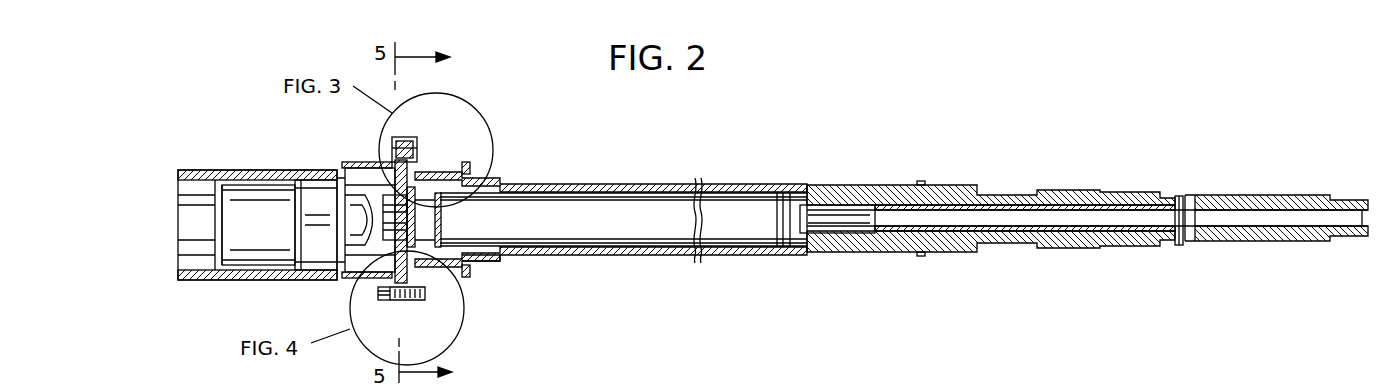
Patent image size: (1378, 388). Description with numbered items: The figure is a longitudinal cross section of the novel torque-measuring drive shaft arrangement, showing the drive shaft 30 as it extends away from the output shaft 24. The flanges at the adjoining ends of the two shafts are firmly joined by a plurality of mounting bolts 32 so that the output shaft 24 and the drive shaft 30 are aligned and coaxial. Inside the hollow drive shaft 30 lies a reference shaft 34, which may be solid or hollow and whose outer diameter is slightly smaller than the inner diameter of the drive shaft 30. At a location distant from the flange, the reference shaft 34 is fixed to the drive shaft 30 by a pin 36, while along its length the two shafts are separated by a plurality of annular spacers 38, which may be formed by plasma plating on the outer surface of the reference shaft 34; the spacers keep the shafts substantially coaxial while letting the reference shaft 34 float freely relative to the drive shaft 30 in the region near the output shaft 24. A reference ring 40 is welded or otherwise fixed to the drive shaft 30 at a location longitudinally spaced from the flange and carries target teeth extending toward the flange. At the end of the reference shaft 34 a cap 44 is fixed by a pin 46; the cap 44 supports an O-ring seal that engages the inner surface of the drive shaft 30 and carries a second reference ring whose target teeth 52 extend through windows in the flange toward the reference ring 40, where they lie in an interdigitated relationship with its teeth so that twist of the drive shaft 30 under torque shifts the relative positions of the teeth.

The output shaft 24 is at (261, 205).
The drive shaft 30 is at (611, 232).
The mounting bolts 32 is at (378, 296).
The reference shaft 34 is at (488, 257).
The pin 36 is at (1183, 196).
The annular spacers 38 is at (522, 185).
The reference ring 40 is at (468, 274).
The cap 44 is at (345, 242).
The pin 46 is at (442, 220).
The target teeth 52 is at (432, 160).